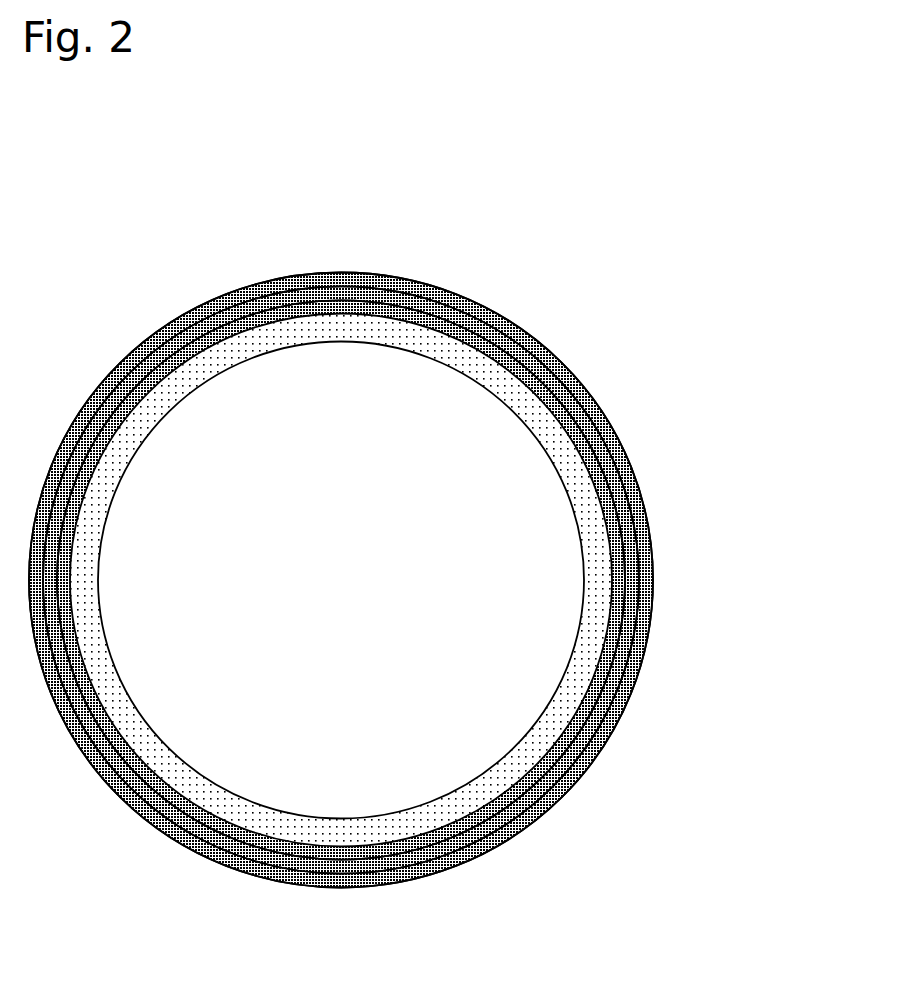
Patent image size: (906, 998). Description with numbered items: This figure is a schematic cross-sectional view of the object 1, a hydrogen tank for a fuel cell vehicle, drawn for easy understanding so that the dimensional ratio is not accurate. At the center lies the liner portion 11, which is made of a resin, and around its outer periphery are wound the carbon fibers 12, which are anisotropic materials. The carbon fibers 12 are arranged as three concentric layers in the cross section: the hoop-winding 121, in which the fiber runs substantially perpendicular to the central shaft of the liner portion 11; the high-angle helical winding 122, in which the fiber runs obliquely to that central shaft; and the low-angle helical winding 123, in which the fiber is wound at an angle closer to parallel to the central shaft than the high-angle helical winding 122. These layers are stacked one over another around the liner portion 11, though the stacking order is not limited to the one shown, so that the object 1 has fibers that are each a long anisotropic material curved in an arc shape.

The object 1 is at (486, 268).
The liner portion 11 is at (513, 412).
The carbon fibers 12 is at (722, 243).
The hoop-winding 121 is at (497, 342).
The high-angle helical winding 122 is at (560, 383).
The low-angle helical winding 123 is at (620, 437).